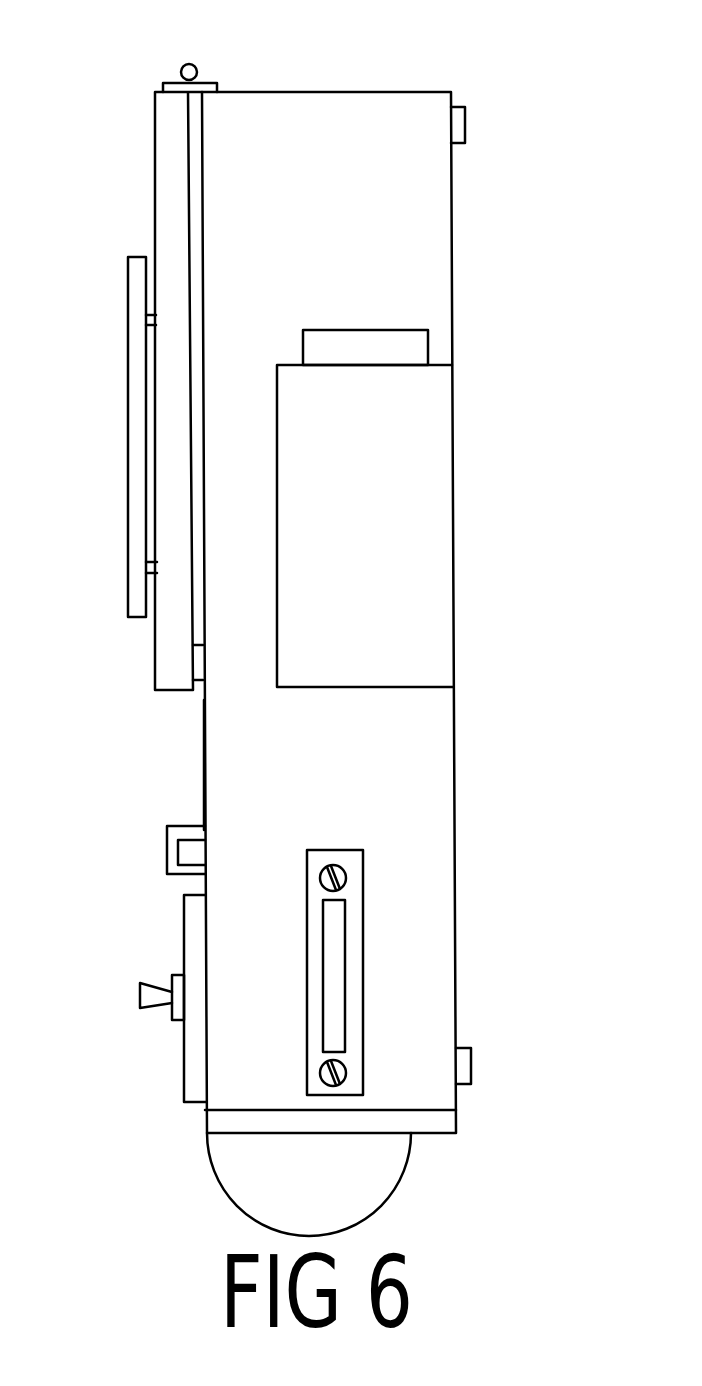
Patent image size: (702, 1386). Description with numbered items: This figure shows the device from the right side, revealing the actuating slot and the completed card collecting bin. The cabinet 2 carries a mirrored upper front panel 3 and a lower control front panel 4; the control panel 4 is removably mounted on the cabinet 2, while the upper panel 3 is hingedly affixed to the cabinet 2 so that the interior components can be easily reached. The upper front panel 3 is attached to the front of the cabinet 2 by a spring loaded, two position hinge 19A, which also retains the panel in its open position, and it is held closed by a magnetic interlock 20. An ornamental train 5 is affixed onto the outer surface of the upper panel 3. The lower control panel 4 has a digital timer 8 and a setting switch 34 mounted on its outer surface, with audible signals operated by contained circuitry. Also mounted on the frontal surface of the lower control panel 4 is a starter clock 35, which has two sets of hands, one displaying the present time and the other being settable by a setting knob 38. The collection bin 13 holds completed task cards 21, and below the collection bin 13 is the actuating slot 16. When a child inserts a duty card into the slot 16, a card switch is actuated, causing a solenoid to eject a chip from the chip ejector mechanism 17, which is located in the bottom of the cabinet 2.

The cabinet 2 is at (412, 222).
The mirrored upper front panel 3 is at (167, 200).
The lower control front panel 4 is at (203, 762).
The ornamental train 5 is at (135, 392).
The digital timer 8 is at (167, 833).
The collection bin 13 is at (423, 548).
The actuating slot 16 is at (333, 988).
The chip ejector mechanism 17 is at (385, 1178).
The spring loaded two position hinge 19A is at (197, 68).
The magnetic interlock 20 is at (197, 657).
The completed task cards 21 is at (412, 352).
The setting switch 34 is at (185, 852).
The starter clock 35 is at (195, 1085).
The setting knob 38 is at (140, 1008).